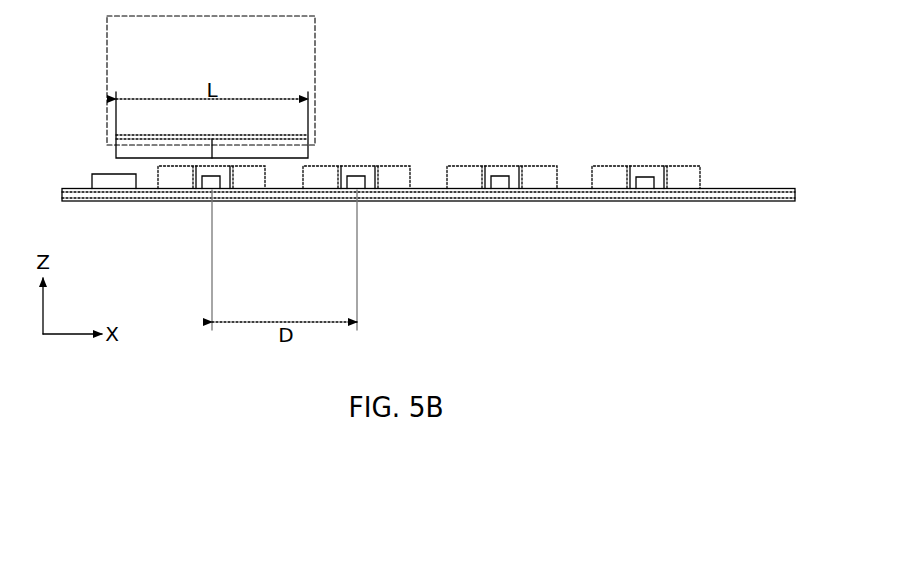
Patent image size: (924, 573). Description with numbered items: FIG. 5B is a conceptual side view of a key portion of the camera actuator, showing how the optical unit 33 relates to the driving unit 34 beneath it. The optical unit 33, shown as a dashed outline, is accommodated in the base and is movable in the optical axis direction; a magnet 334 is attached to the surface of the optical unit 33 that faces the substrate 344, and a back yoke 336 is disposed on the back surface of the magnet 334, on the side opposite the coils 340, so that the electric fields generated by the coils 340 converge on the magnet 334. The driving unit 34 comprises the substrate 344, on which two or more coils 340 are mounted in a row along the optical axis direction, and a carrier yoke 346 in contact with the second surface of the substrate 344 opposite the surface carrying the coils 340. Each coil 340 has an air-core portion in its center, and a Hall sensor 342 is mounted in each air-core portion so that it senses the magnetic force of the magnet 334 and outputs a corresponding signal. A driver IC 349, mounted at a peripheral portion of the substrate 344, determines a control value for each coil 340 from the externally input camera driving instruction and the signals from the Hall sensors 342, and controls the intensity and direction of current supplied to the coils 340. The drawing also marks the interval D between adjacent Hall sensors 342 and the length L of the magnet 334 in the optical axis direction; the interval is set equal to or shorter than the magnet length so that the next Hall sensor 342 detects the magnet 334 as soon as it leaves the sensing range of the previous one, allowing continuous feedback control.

The optical unit 33 is at (107, 63).
The magnet 334 is at (122, 152).
The back yoke 336 is at (137, 135).
The driving unit 34 is at (506, 204).
The coil 340 is at (178, 177).
The Hall sensor 342 is at (217, 185).
The substrate 344 is at (250, 190).
The carrier yoke 346 is at (310, 198).
The driver IC 349 is at (117, 183).